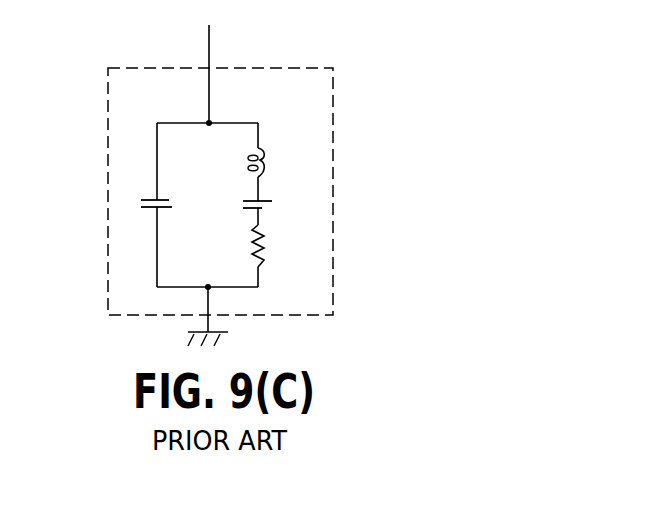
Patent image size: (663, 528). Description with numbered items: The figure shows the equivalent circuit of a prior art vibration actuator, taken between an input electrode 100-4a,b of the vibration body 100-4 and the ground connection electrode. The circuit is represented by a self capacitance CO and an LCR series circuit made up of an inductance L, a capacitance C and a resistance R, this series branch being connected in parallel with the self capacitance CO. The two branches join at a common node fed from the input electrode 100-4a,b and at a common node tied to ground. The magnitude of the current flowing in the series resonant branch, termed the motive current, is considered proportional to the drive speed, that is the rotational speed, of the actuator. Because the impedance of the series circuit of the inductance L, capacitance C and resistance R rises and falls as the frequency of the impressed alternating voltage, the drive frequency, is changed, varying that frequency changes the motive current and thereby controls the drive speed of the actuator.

The vibration body 100-4 is at (360, 121).
The input electrodes 100-4a,b is at (210, 44).
The self capacitance CO is at (142, 201).
The inductance L is at (263, 172).
The capacitance C is at (273, 208).
The resistance R is at (268, 258).